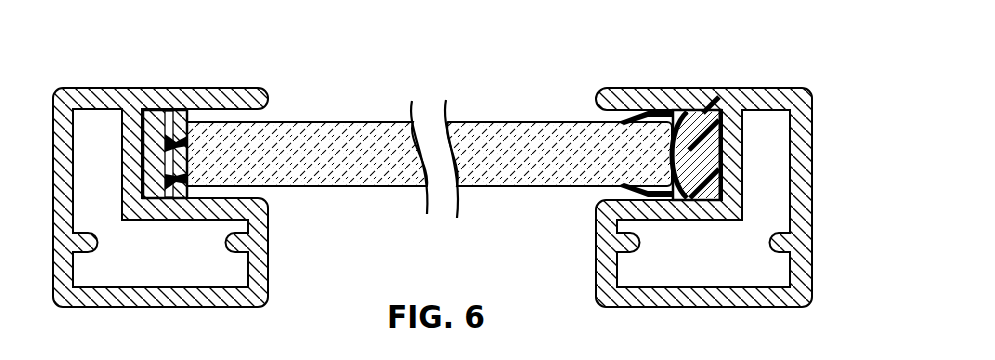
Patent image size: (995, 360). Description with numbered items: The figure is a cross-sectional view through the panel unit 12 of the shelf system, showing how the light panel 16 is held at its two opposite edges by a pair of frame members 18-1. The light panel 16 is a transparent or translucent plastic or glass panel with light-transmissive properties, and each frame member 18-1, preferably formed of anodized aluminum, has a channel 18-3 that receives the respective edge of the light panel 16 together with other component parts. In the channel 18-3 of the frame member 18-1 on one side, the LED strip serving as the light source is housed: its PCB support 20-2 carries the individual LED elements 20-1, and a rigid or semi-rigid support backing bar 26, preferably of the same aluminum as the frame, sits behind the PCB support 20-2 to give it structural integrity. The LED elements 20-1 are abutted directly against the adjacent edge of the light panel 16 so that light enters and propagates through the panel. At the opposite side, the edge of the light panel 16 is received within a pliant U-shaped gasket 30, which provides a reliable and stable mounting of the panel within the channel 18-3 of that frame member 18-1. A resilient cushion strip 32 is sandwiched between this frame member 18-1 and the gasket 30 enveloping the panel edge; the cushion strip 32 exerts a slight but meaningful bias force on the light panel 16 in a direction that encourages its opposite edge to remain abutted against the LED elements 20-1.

The panel unit 12 is at (675, 79).
The light panel 16 is at (364, 166).
The frame member 18-1 is at (88, 100).
The channel 18-3 is at (262, 117).
The LED elements 20-1 is at (183, 135).
The PCB support 20-2 is at (175, 130).
The support backing bar 26 is at (155, 115).
The U-shaped gasket 30 is at (700, 185).
The cushion strip 32 is at (700, 179).